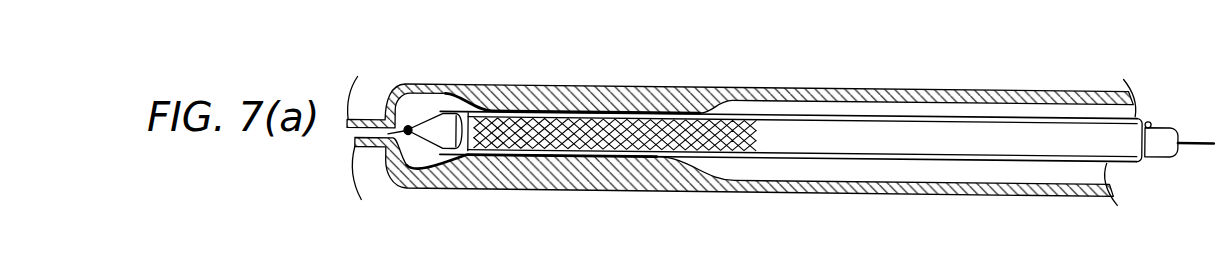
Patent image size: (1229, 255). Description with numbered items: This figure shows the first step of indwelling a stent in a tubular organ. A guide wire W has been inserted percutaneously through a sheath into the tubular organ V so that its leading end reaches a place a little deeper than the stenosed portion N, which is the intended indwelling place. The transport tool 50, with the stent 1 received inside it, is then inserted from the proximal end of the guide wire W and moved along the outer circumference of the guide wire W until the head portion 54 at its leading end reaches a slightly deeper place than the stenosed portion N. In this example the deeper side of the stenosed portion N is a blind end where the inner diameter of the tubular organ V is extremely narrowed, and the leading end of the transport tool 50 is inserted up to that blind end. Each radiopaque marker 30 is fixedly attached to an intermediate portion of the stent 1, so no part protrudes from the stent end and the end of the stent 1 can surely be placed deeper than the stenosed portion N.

The stent 1 is at (811, 83).
The radiopaque marker 30 is at (492, 110).
The transport tool 50 is at (879, 106).
The head portion 54 is at (438, 117).
The tubular organ V is at (968, 89).
The stenosed portion N is at (602, 168).
The guide wire W is at (407, 136).